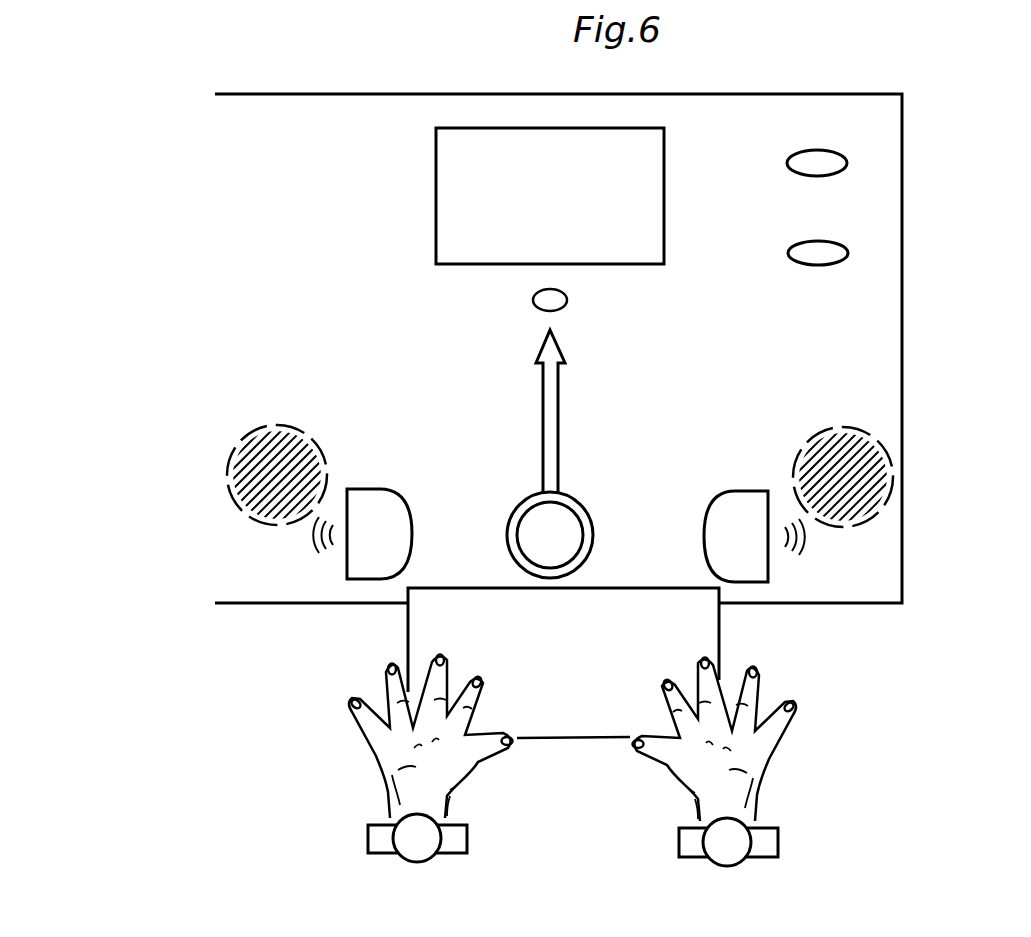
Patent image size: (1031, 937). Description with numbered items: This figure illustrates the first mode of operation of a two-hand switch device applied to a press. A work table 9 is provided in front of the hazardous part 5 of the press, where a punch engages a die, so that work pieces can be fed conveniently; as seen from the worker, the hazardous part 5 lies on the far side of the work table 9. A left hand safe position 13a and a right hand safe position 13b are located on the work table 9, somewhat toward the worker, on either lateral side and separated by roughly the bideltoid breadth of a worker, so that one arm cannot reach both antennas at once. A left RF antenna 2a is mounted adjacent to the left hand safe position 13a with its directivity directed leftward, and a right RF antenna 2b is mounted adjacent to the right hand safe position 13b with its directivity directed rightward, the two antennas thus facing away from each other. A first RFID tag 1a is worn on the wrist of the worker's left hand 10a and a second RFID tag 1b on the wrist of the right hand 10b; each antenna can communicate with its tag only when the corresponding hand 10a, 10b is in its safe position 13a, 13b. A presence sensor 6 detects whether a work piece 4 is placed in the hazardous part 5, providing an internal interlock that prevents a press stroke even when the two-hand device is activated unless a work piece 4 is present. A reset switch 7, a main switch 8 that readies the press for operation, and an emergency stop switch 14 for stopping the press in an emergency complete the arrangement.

The first RFID tag 1a is at (377, 835).
The second RFID tag 1b is at (770, 845).
The left RF antenna 2a is at (375, 500).
The right RF antenna 2b is at (745, 497).
The work piece 4 is at (565, 703).
The hazardous part 5 is at (561, 206).
The presence sensor 6 is at (557, 300).
The reset switch 7 is at (835, 255).
The main switch 8 is at (833, 167).
The work table 9 is at (860, 389).
The left hand 10a is at (410, 772).
The right hand 10b is at (745, 767).
The left hand safe position 13a is at (262, 482).
The right hand safe position 13b is at (877, 480).
The emergency stop switch 14 is at (565, 527).